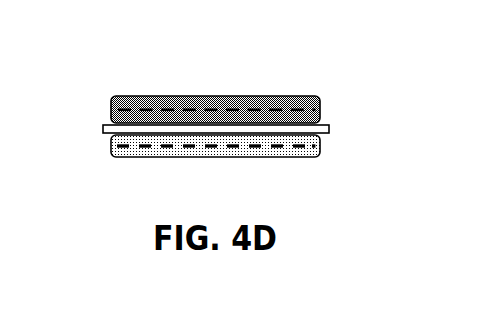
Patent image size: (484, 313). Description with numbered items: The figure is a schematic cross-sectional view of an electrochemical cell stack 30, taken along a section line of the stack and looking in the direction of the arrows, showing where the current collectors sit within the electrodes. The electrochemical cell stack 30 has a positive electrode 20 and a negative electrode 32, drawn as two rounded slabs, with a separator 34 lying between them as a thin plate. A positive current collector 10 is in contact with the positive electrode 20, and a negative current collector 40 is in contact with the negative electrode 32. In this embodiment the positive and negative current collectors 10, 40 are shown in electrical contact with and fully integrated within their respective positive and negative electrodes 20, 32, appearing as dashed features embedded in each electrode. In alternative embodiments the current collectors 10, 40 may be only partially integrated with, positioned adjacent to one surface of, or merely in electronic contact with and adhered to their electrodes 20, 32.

The positive current collector 10 is at (280, 147).
The positive electrode 20 is at (171, 152).
The electrochemical cell stack 30 is at (78, 154).
The negative electrode 32 is at (258, 117).
The separator 34 is at (108, 125).
The negative current collector 40 is at (160, 98).